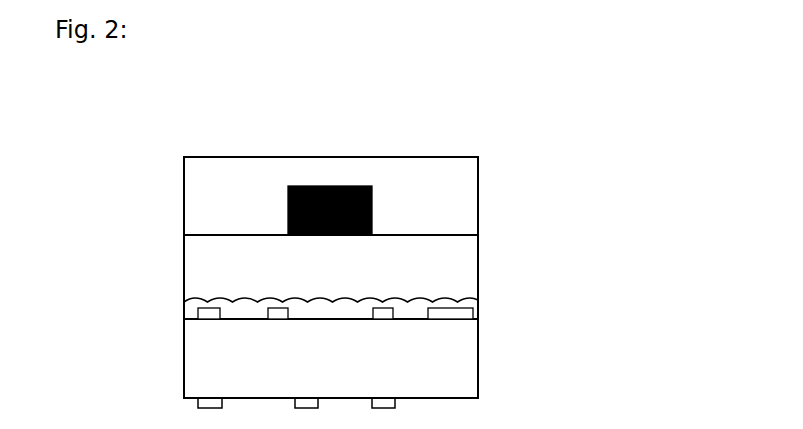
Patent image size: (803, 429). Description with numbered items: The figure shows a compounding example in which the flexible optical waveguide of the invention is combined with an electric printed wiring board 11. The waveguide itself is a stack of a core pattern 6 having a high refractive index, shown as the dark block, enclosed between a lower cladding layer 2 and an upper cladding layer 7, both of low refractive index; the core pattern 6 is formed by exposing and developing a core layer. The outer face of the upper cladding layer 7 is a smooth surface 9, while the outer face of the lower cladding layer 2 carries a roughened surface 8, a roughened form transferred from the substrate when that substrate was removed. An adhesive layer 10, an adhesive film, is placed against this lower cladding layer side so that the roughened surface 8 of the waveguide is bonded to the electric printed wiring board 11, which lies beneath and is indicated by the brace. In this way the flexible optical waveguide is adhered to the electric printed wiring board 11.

The lower cladding layer 2 is at (480, 250).
The core pattern 6 is at (372, 190).
The upper cladding layer 7 is at (430, 167).
The roughened surface 8 is at (438, 303).
The smooth surface 9 is at (405, 158).
The adhesive layer 10 is at (242, 309).
The electric printed wiring board 11 is at (492, 307).